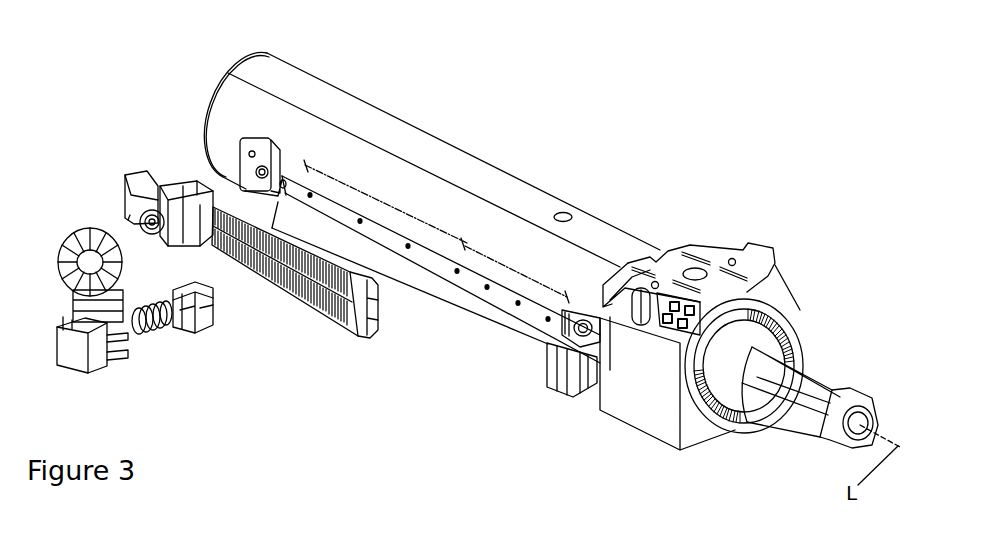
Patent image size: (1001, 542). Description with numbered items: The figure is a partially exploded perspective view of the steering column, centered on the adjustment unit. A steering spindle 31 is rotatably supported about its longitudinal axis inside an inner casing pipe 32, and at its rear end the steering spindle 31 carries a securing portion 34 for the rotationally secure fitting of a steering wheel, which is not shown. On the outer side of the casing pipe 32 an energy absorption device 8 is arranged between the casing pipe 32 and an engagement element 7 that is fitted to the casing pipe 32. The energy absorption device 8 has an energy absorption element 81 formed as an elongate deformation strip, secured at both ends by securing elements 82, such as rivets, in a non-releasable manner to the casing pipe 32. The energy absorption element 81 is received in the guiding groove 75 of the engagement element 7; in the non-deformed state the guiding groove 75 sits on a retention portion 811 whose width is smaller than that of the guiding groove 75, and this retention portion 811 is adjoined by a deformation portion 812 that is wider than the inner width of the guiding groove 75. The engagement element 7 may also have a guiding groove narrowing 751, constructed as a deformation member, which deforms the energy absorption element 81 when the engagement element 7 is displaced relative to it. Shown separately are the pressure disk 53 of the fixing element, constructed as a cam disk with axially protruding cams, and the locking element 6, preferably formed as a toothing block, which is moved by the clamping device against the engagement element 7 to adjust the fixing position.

The locking element 6 is at (203, 320).
The engagement element 7 is at (305, 313).
The energy absorption device 8 is at (402, 357).
The steering spindle 31 is at (757, 345).
The inner casing pipe 32 is at (500, 187).
The securing portion 34 is at (820, 377).
The pressure disk 53 is at (88, 235).
The guiding groove 75 is at (384, 310).
The energy absorption element 81 is at (508, 300).
The securing elements 82 is at (262, 168).
The guiding groove narrowing 751 is at (193, 190).
The retention portion 811 is at (380, 193).
The deformation portion 812 is at (512, 262).